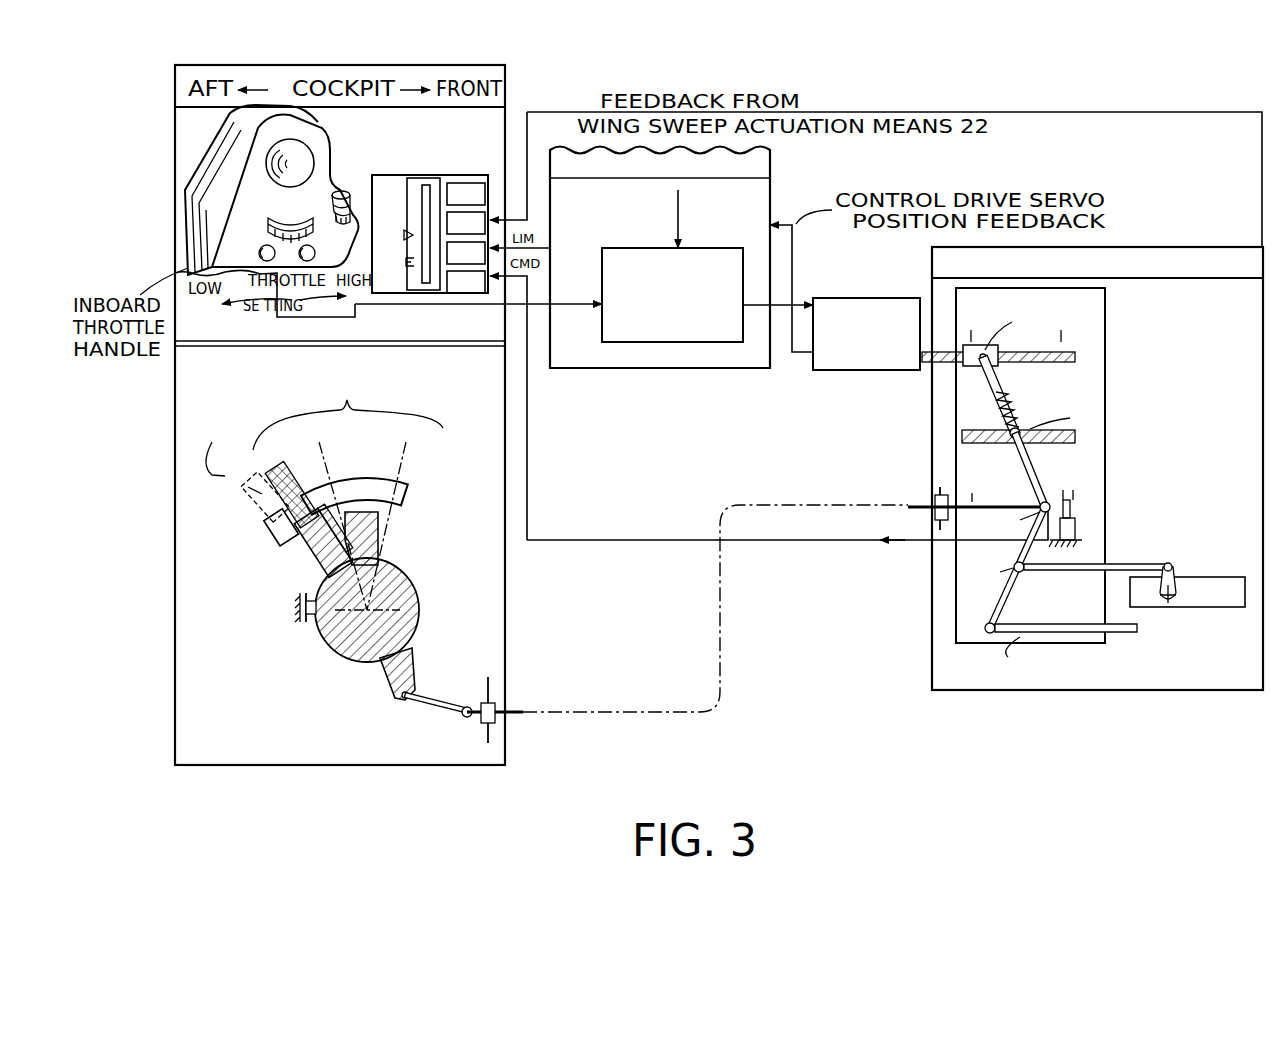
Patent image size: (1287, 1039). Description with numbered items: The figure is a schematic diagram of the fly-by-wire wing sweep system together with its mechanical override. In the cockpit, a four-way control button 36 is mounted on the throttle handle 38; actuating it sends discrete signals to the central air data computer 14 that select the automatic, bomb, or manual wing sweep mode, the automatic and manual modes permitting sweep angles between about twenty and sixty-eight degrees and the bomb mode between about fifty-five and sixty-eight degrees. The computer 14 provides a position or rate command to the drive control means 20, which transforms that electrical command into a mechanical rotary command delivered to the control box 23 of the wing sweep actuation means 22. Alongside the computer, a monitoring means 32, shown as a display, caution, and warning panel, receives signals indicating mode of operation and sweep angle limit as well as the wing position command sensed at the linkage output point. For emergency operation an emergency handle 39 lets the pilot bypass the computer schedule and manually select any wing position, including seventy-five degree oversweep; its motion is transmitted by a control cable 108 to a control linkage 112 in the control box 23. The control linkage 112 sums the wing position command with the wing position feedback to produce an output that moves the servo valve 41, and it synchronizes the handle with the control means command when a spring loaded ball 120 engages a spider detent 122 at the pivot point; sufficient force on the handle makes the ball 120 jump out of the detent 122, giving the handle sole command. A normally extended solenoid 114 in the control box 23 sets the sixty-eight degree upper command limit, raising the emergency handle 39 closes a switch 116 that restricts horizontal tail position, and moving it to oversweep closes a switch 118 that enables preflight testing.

The central air data computer 14 is at (770, 157).
The drive control means 20 is at (848, 373).
The wing sweep actuation means 22 is at (1187, 247).
The control box 23 is at (1036, 490).
The monitoring means 32 is at (423, 175).
The four-way control button 36 is at (298, 158).
The throttle handle 38 is at (336, 170).
The emergency handle 39 is at (351, 555).
The servo valve 41 is at (1210, 610).
The control cable 108 is at (722, 633).
The control linkage 112 is at (1032, 486).
The solenoid 114 is at (1077, 508).
The switch 116 is at (352, 533).
The switch 118 is at (312, 626).
The spring loaded ball 120 is at (1022, 425).
The spider detent 122 is at (995, 398).